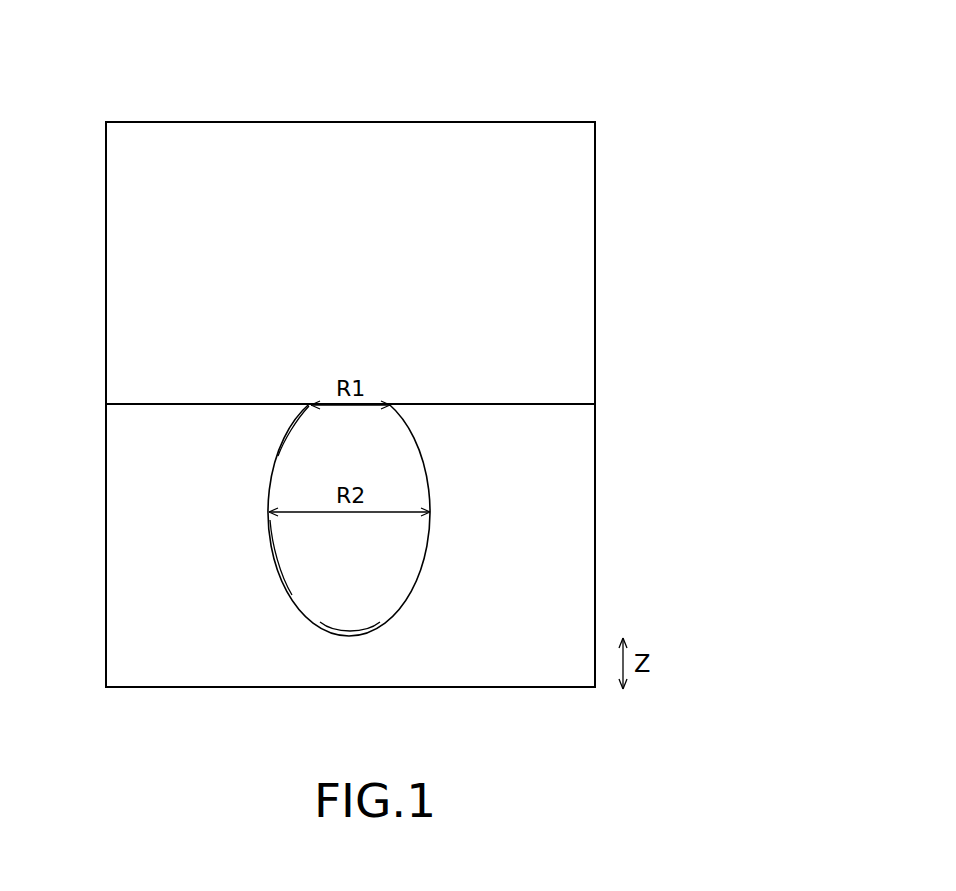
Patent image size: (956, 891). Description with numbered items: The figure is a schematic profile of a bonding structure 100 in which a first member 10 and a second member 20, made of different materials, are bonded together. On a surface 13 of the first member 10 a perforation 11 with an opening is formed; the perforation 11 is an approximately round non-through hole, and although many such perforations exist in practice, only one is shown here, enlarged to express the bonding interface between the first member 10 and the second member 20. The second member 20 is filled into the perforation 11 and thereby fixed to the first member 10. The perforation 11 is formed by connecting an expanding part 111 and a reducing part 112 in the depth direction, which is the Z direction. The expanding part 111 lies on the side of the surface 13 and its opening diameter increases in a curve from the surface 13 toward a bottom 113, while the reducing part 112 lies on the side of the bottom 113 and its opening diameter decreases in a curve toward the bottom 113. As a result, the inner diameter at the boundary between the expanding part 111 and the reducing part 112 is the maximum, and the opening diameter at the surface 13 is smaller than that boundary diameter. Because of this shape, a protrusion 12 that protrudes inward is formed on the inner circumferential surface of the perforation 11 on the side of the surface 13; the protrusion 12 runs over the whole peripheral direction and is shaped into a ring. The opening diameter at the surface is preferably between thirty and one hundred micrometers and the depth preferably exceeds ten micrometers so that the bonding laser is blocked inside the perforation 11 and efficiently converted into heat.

The bonding structure 100 is at (494, 87).
The second member 20 is at (567, 299).
The first member 10 is at (567, 514).
The perforation 11 is at (270, 531).
The protrusion 12 is at (405, 403).
The surface 13 is at (526, 403).
The expanding part 111 is at (276, 459).
The reducing part 112 is at (278, 566).
The bottom 113 is at (343, 636).